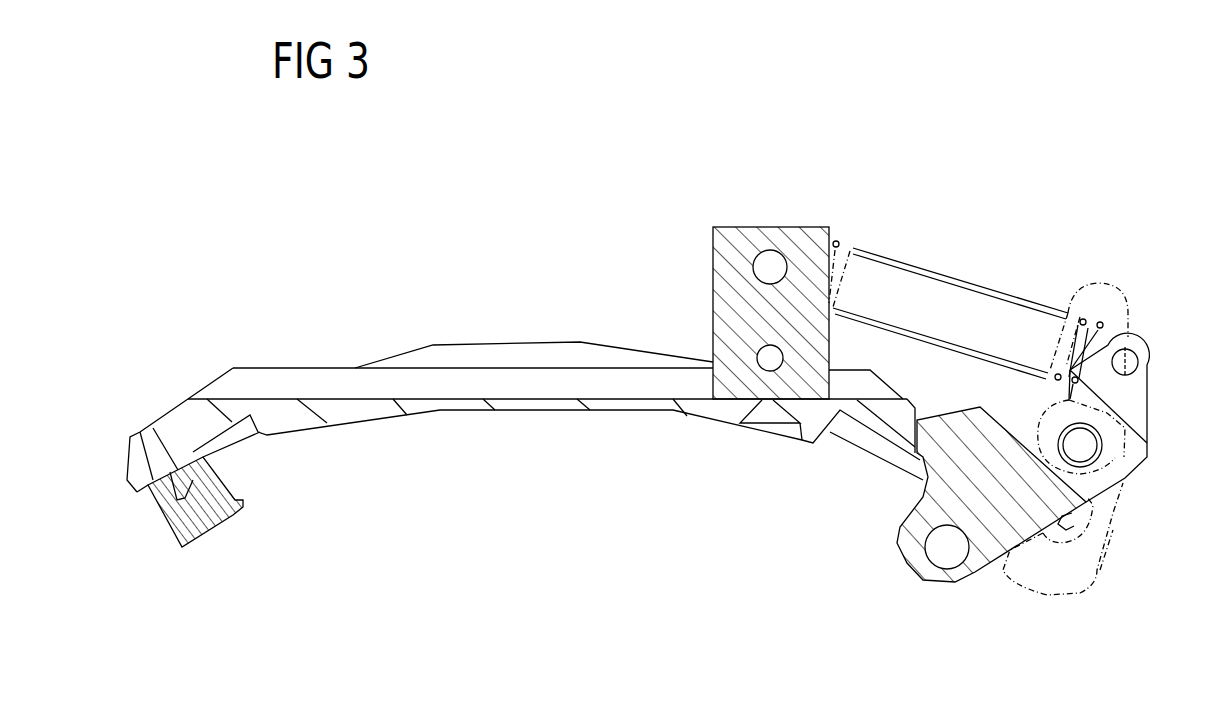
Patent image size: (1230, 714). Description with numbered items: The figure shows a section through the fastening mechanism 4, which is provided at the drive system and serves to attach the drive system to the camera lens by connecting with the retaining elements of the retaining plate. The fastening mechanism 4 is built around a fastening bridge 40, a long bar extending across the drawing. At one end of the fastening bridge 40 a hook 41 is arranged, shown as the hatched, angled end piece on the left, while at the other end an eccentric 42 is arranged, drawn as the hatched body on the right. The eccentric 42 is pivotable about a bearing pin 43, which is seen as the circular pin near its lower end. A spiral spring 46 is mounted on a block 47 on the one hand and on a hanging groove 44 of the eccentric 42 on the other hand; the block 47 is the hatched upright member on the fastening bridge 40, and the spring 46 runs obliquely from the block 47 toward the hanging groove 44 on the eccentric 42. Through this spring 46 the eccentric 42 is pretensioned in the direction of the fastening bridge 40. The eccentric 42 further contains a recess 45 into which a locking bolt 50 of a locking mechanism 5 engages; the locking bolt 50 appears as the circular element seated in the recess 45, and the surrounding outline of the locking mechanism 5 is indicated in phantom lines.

The fastening mechanism 4 is at (462, 226).
The fastening bridge 40 is at (524, 400).
The hook 41 is at (205, 528).
The eccentric 42 is at (930, 508).
The bearing pin 43 is at (942, 560).
The hanging groove 44 is at (1125, 362).
The recess 45 is at (1100, 400).
The spiral spring 46 is at (928, 287).
The block 47 is at (773, 258).
The locking bolt 50 is at (1090, 452).
The locking mechanism 5 is at (1083, 555).